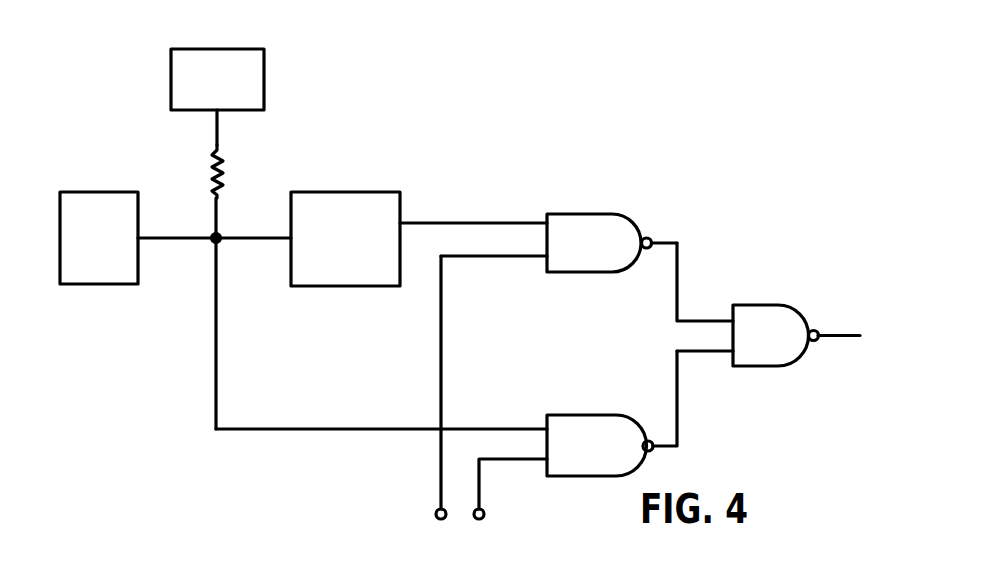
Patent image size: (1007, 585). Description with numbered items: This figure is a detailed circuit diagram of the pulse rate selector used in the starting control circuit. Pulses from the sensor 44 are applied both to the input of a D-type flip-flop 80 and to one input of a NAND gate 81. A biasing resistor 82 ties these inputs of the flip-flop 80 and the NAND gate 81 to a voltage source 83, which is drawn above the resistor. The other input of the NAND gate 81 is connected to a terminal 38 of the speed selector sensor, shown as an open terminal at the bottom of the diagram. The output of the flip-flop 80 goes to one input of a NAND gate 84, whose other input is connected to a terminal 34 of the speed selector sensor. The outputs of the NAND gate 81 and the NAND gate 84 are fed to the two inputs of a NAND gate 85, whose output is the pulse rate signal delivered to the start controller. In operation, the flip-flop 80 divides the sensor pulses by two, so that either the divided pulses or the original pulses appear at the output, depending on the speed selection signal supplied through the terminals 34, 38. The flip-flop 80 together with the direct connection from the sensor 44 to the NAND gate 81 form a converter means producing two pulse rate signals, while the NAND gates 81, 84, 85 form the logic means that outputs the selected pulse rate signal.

The terminal 34 is at (437, 511).
The terminal 38 is at (483, 511).
The sensor 44 is at (120, 285).
The D-type flip-flop 80 is at (365, 287).
The NAND gate 81 is at (577, 413).
The biasing resistor 82 is at (222, 168).
The voltage source 83 is at (265, 73).
The NAND gate 84 is at (570, 274).
The NAND gate 85 is at (760, 304).